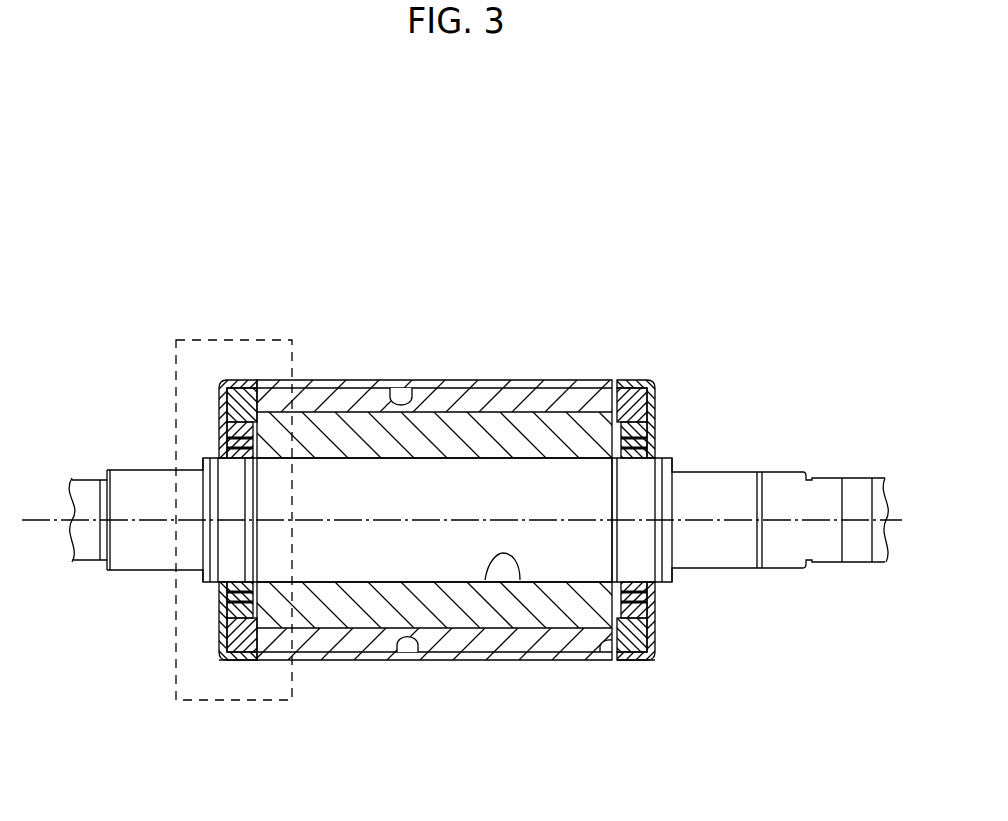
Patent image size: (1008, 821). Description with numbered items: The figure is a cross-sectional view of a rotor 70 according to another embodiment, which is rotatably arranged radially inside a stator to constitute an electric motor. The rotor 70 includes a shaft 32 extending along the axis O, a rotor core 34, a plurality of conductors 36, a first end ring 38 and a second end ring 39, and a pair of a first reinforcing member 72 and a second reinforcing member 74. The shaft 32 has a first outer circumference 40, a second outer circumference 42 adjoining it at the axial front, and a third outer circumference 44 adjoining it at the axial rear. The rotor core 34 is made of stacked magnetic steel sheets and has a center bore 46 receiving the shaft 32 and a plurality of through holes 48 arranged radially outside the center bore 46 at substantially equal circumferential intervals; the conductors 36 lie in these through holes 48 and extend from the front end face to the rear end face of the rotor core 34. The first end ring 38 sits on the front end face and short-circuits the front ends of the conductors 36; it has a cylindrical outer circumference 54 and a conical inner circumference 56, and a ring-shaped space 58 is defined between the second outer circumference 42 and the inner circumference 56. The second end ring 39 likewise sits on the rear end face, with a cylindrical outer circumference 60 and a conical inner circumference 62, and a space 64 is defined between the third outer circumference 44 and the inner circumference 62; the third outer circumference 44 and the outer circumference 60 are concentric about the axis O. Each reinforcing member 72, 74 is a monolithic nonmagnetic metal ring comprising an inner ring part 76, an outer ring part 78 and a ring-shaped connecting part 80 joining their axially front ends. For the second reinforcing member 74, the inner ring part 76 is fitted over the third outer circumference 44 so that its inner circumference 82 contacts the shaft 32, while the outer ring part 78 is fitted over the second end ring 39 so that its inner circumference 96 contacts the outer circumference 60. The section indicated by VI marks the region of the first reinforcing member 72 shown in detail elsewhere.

The rotor 70 is at (843, 118).
The shaft 32 is at (782, 462).
The rotor core 34 is at (560, 660).
The conductors 36 is at (478, 400).
The first end ring 38 is at (243, 390).
The second end ring 39 is at (630, 380).
The first outer circumference 40 is at (335, 457).
The second outer circumference 42 is at (220, 440).
The third outer circumference 44 is at (656, 442).
The center bore 46 is at (520, 578).
The through holes 48 is at (405, 395).
The outer circumference 54 is at (233, 382).
The inner circumference 56 is at (220, 427).
The space 58 is at (220, 618).
The outer circumference 60 is at (640, 380).
The inner circumference 62 is at (656, 398).
The space 64 is at (654, 628).
The first reinforcing member 72 is at (208, 394).
The second reinforcing member 74 is at (665, 675).
The inner ring part 76 is at (220, 587).
The outer ring part 78 is at (232, 662).
The connecting part 80 is at (222, 640).
The inner circumference 82 is at (654, 585).
The inner circumference 96 is at (608, 652).
The axis O is at (35, 515).
The section VI is at (292, 702).